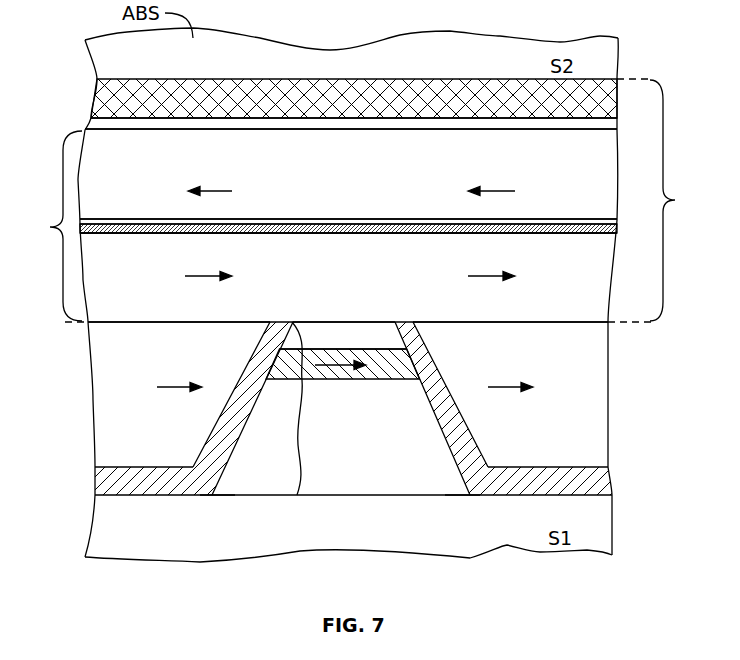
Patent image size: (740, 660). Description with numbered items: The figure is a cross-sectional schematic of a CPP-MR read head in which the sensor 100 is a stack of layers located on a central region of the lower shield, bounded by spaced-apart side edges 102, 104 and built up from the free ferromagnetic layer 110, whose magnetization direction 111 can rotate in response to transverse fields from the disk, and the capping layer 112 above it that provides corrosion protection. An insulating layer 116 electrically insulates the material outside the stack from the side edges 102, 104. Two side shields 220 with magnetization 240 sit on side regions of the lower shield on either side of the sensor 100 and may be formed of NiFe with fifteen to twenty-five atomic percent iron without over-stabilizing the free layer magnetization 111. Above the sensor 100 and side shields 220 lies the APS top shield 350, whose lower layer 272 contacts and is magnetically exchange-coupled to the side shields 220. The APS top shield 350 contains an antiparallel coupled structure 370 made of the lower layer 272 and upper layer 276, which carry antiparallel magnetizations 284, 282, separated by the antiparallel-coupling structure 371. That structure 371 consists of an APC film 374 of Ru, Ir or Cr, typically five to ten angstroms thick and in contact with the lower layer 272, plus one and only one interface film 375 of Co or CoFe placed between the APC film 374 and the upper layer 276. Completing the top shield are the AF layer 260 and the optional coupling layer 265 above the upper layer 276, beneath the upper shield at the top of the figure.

The sensor 100 is at (302, 405).
The side edge 102 is at (215, 480).
The side edge 104 is at (464, 480).
The free ferromagnetic layer 110 is at (333, 340).
The magnetization direction of the free layer 111 is at (345, 367).
The capping layer 112 is at (365, 332).
The insulating layer 116 is at (98, 483).
The side shields 220 is at (99, 395).
The magnetization of the side shields 240 is at (181, 384).
The AF layer 260 is at (103, 100).
The coupling layer 265 is at (103, 124).
The lower layer 272 is at (595, 287).
The upper layer 276 is at (595, 175).
The magnetization of the upper layer 282 is at (210, 191).
The magnetization of the lower layer 284 is at (210, 275).
The APS top shield 350 is at (683, 200).
The antiparallel coupled structure 370 is at (47, 226).
The antiparallel-coupling structure 371 is at (617, 219).
The APC film 374 is at (385, 232).
The interface film 375 is at (357, 222).